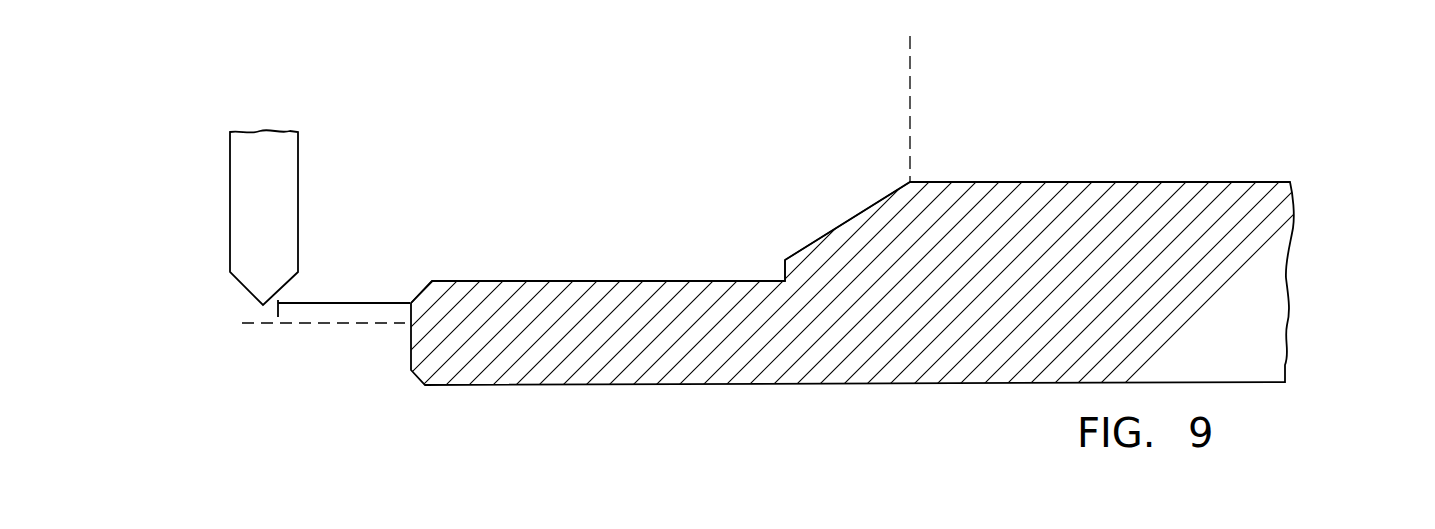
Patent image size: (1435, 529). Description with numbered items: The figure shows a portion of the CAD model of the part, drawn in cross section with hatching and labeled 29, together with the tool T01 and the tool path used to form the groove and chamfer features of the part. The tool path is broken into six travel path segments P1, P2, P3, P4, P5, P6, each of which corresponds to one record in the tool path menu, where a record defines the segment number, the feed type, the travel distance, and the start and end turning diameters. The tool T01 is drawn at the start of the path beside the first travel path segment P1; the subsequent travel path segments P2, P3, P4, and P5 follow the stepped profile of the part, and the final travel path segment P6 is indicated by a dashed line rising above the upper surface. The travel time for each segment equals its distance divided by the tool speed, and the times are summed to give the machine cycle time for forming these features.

The workpiece 29 is at (1318, 162).
The tool T01 is at (240, 198).
The travel path segment P1 is at (322, 303).
The travel path segment P2 is at (423, 285).
The travel path segment P3 is at (577, 281).
The travel path segment P4 is at (785, 268).
The travel path segment P5 is at (842, 223).
The travel path segment P6 is at (910, 105).